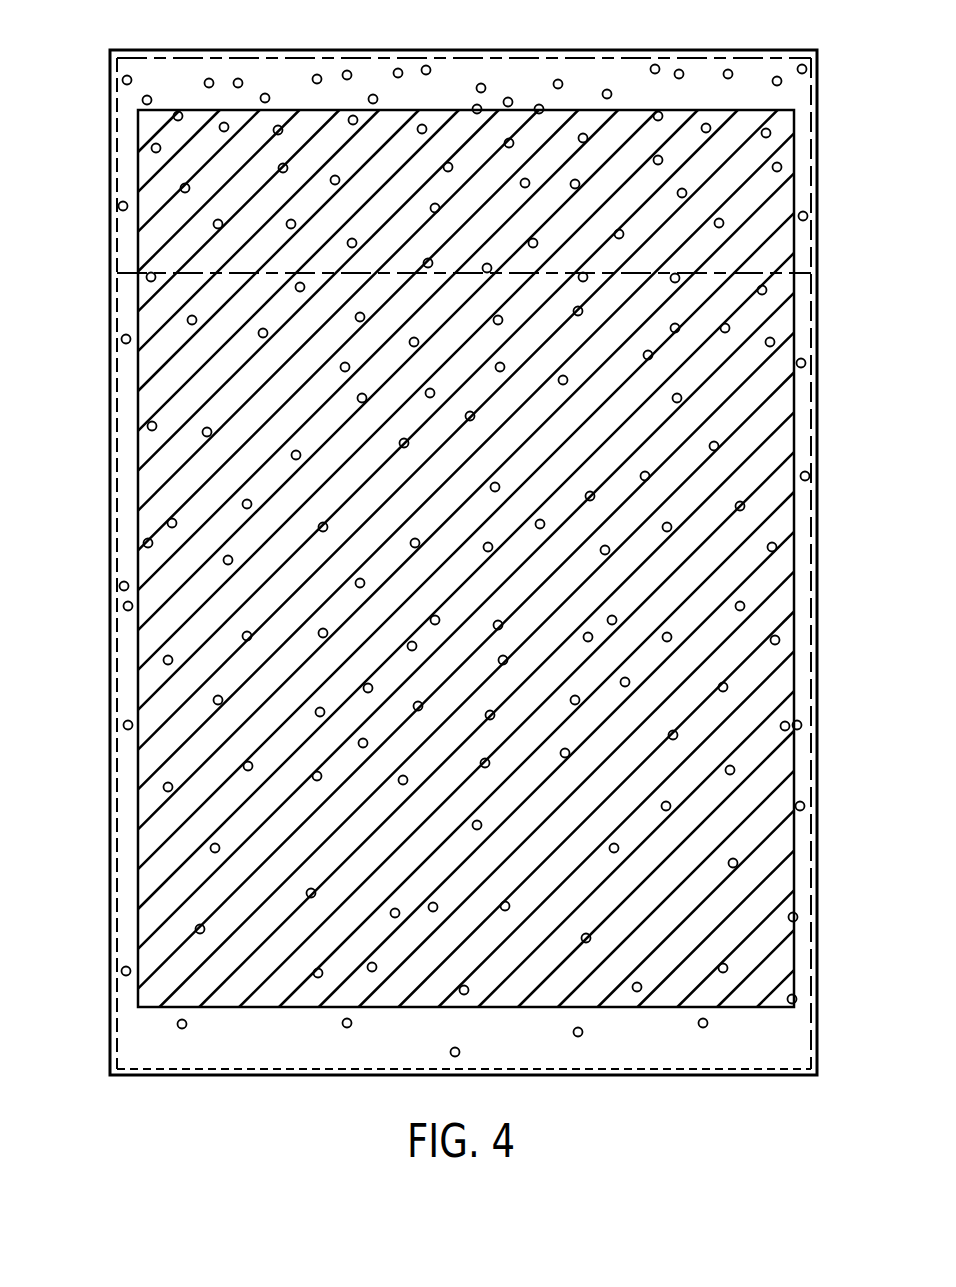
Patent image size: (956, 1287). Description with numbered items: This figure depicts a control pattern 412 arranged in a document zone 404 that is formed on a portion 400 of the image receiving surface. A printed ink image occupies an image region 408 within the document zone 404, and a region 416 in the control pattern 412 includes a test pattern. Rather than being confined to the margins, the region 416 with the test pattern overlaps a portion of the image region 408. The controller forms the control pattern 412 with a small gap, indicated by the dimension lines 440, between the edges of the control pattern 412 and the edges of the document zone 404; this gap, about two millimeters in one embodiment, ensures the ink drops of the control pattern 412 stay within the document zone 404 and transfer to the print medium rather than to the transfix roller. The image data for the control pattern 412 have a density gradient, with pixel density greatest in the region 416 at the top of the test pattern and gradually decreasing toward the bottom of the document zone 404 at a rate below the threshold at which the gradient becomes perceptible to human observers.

The portion of the image receiving surface 400 is at (451, 563).
The document zone 404 is at (108, 133).
The image region 408 is at (137, 300).
The control pattern 412 is at (813, 378).
The test pattern region 416 is at (798, 282).
The dimension lines 440 is at (468, 53).